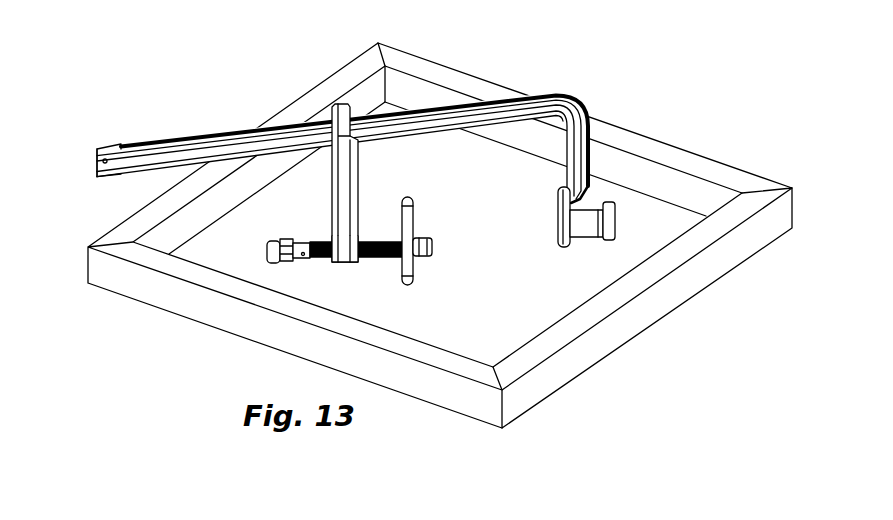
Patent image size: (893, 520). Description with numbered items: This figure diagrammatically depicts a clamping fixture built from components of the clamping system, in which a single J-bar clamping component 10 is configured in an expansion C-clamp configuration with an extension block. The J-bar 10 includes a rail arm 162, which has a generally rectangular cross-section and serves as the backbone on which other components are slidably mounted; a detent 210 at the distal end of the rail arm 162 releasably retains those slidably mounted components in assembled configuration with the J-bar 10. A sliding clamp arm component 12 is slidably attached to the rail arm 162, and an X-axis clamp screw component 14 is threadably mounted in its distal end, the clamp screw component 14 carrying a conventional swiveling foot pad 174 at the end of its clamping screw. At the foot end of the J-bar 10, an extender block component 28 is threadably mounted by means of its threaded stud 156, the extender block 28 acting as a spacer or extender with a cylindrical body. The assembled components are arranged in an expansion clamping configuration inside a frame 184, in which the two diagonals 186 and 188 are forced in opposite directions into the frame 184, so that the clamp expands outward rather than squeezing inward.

The J-bar clamping component 10 is at (388, 192).
The sliding clamp arm component 12 is at (374, 166).
The X-axis clamp screw component 14 is at (427, 265).
The extender block component 28 is at (592, 245).
The threaded stud 156 is at (558, 222).
The rail arm 162 is at (342, 125).
The swiveling foot pad 174 is at (295, 266).
The frame 184 is at (502, 90).
The diagonal 186 is at (643, 225).
The diagonal 188 is at (252, 257).
The detent 210 is at (107, 140).